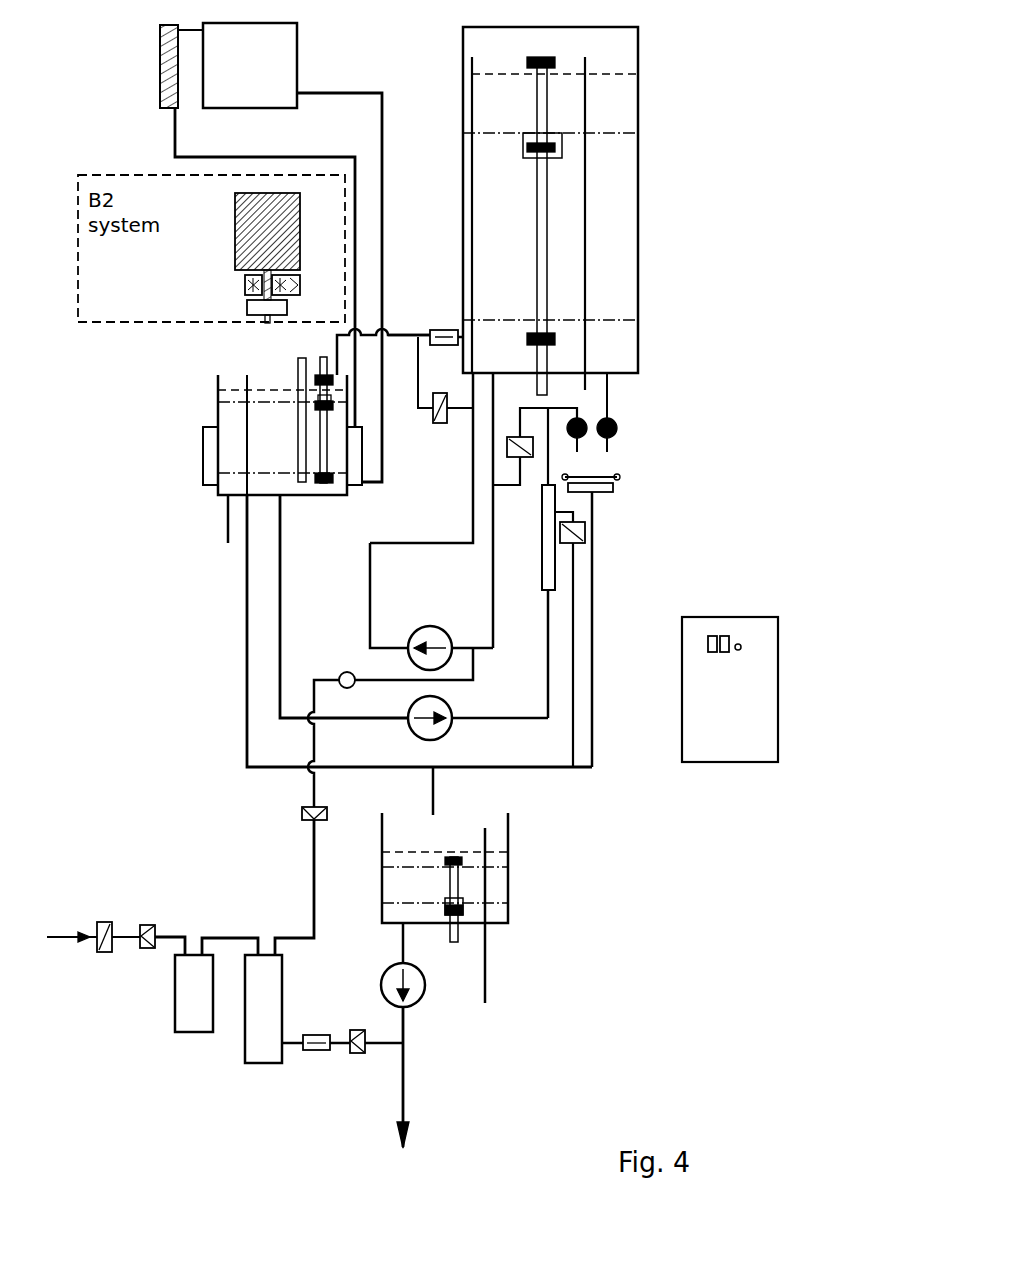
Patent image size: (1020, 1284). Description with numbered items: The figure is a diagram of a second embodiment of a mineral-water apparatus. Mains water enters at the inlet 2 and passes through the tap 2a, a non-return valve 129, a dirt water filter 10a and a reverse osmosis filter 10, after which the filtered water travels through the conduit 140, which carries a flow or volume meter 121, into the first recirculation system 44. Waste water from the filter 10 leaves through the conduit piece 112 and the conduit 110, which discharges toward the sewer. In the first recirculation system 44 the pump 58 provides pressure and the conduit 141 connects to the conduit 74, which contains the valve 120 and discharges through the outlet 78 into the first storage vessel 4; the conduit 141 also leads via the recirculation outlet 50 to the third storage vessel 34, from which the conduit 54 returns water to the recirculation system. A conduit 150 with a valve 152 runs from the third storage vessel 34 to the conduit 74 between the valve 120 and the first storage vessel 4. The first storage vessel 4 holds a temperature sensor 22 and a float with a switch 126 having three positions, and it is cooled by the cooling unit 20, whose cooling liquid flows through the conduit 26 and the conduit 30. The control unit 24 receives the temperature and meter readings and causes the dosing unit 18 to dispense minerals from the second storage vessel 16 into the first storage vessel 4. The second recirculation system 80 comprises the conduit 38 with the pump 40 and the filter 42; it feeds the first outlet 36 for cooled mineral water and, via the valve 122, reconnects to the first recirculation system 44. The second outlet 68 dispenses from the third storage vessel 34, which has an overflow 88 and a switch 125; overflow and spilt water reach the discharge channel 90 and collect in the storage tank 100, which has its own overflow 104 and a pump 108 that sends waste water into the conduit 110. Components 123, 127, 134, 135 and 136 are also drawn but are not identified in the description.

The mains water inlet 2 is at (62, 945).
The tap 2a is at (105, 955).
The first storage vessel 4 is at (228, 487).
The filter 10 is at (245, 1052).
The dirt water filter 10a is at (175, 1022).
The second storage vessel 16 is at (235, 205).
The dosing unit 18 is at (247, 305).
The cooling unit 20 is at (299, 35).
The temperature sensor 22 is at (298, 365).
The control unit 24 is at (731, 740).
The conduit 26 is at (362, 93).
The conduit 30 is at (335, 157).
The third storage vessel 34 is at (638, 217).
The first outlet 36 is at (586, 436).
The conduit 38 is at (283, 652).
The pump 40 is at (450, 708).
The filter 42 is at (542, 570).
The first recirculation system 44 is at (421, 473).
The recirculation outlet 50 is at (470, 113).
The conduit 54 is at (493, 390).
The pump 58 is at (450, 638).
The second outlet 68 is at (617, 428).
The conduit 74 is at (398, 334).
The outlet 78 is at (335, 348).
The second recirculation system 80 is at (291, 536).
The overflow 88 is at (585, 165).
The discharge channel 90 is at (592, 680).
The storage tank 100 is at (508, 885).
The overflow 104 is at (485, 972).
The pump 108 is at (419, 1002).
The conduit 110 is at (403, 1088).
The conduit piece 112 is at (382, 1045).
The valve 120 is at (440, 425).
The flow meter 121 is at (347, 672).
The valve 122 is at (528, 459).
The level electrode 123 is at (458, 887).
The switch 125 is at (547, 285).
The float with switch 126 is at (327, 450).
The heater 127 is at (617, 482).
The non-return valve 129 is at (147, 925).
The valve 134 is at (585, 532).
The check valve 135 is at (302, 814).
The check valve 136 is at (355, 1030).
The conduit 140 is at (312, 868).
The conduit 141 is at (370, 588).
The conduit 150 is at (445, 330).
The valve 152 is at (446, 346).